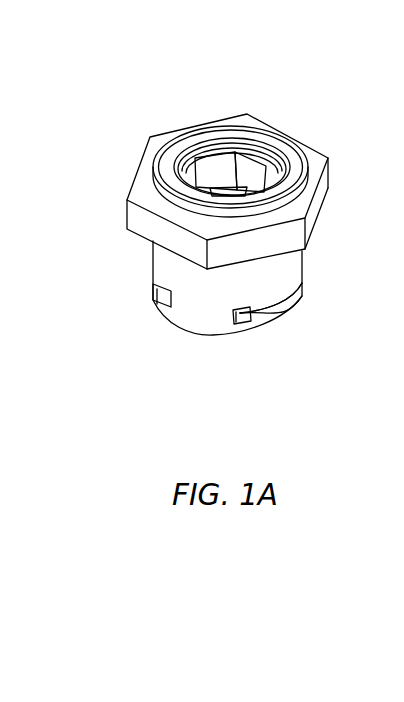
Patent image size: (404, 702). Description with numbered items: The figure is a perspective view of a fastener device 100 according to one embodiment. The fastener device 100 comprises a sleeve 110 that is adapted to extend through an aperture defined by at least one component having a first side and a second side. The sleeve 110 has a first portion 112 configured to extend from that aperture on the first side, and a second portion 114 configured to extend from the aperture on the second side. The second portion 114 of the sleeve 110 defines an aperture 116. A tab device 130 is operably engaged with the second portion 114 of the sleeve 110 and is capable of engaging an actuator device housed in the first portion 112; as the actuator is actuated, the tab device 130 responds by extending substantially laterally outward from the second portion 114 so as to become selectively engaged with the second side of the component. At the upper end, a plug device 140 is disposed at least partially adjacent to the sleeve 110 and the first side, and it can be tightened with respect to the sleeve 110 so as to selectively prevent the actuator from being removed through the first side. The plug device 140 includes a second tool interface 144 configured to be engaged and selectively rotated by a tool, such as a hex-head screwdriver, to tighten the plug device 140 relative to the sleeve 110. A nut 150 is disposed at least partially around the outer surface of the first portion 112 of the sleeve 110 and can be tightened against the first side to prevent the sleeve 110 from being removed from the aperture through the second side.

The fastener device 100 is at (120, 258).
The sleeve 110 is at (200, 308).
The first portion 112 is at (337, 125).
The second portion 114 is at (304, 278).
The aperture 116 is at (240, 317).
The tab device 130 is at (280, 303).
The plug device 140 is at (268, 158).
The second tool interface 144 is at (223, 172).
The nut 150 is at (143, 182).